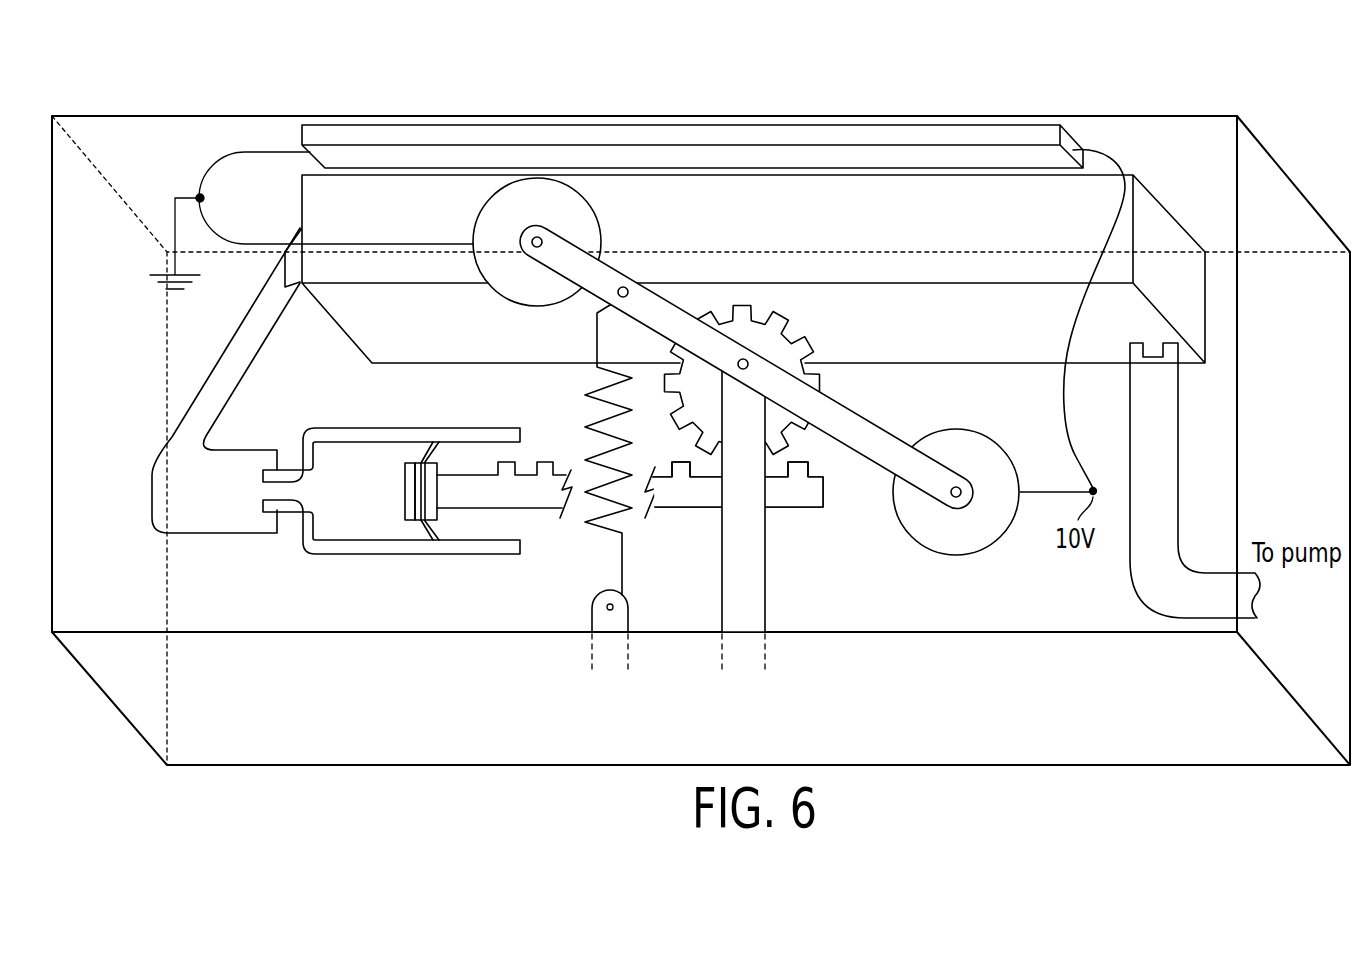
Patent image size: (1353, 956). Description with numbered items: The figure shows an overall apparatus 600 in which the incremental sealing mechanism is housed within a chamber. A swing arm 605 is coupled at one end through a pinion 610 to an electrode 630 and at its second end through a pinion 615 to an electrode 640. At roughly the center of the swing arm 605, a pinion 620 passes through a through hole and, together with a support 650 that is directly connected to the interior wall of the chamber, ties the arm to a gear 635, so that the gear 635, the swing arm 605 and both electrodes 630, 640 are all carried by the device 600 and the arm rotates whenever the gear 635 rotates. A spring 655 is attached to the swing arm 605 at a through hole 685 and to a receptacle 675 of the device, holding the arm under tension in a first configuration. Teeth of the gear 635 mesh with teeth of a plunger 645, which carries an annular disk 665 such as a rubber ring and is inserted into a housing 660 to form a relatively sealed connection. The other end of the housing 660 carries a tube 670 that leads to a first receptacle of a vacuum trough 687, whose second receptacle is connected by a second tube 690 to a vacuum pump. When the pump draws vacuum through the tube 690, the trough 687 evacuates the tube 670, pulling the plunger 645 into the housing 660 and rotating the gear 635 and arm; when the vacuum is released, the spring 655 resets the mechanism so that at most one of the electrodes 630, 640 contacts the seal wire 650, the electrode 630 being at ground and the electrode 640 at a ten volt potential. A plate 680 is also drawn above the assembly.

The apparatus 600 is at (1307, 93).
The swing arm 605 is at (870, 422).
The pinion 610 is at (532, 242).
The pinion 615 is at (960, 486).
The pinion 620 is at (741, 360).
The electrode 630 is at (556, 214).
The gear 635 is at (787, 355).
The electrode 640 is at (975, 550).
The plunger 645 is at (466, 485).
The support 650 is at (766, 547).
The spring 655 is at (603, 532).
The housing 660 is at (326, 423).
The annular disk 665 is at (436, 522).
The tube 670 is at (232, 497).
The receptacle 675 is at (623, 613).
The electrode plate 680 is at (667, 133).
The through hole 685 is at (628, 288).
The vacuum trough 687 is at (1160, 233).
The second tube 690 is at (1176, 545).